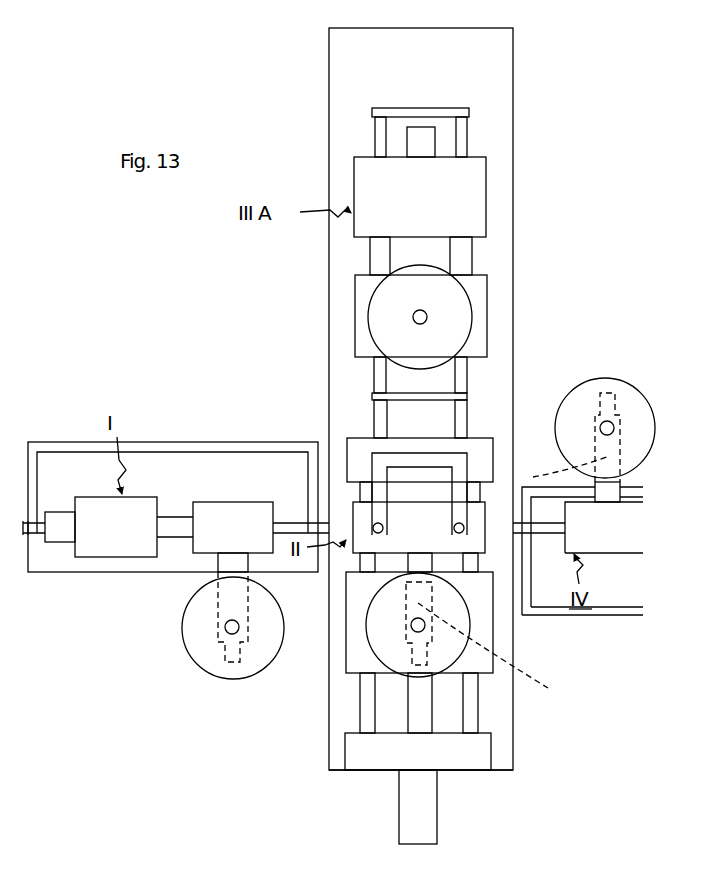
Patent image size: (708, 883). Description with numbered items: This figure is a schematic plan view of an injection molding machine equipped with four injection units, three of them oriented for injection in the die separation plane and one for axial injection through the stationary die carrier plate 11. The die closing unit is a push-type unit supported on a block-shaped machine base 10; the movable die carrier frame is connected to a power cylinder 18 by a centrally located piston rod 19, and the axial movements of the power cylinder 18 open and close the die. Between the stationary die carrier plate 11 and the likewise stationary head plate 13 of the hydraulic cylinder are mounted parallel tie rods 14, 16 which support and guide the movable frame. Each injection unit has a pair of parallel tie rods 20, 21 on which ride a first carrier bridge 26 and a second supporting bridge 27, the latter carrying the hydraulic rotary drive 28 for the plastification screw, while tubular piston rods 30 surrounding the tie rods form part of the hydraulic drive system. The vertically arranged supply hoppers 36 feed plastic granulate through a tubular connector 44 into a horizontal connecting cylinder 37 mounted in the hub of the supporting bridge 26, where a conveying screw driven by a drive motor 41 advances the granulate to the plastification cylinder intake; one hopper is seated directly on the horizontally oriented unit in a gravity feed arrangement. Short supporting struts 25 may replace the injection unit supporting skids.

The machine base 10 is at (490, 72).
The supporting struts 25 is at (398, 110).
The hydraulic rotary drive 28 is at (427, 135).
The second supporting bridge 27 is at (380, 175).
The tubular piston rods 30 is at (458, 245).
The first carrier bridge 26 is at (478, 289).
The supply hopper 36 is at (387, 303).
The tubular connector 44 is at (423, 310).
The tie rod 20 is at (380, 367).
The stationary die carrier plate 11 is at (362, 445).
The tie rod 21 is at (295, 527).
The connecting cylinder 37 is at (130, 638).
The drive motor 41 is at (433, 680).
The tie rod 14 is at (368, 726).
The tie rod 16 is at (472, 720).
The piston rod 19 is at (433, 735).
The head plate 13 is at (392, 760).
The power cylinder 18 is at (430, 820).